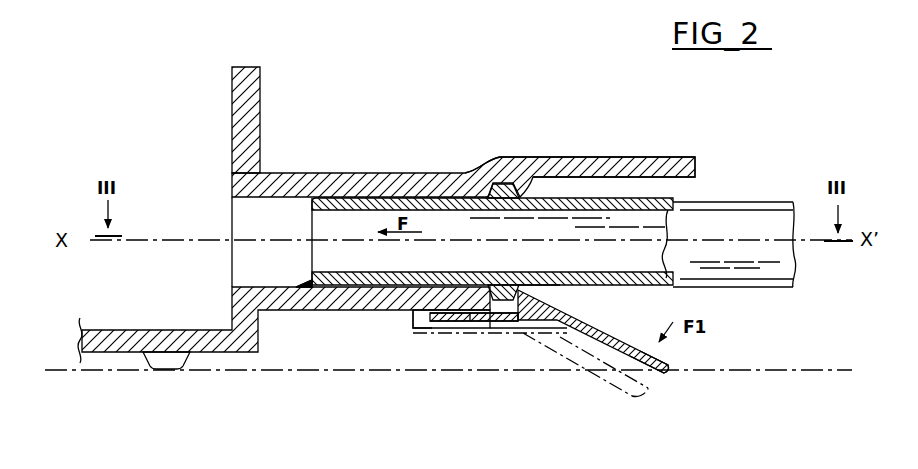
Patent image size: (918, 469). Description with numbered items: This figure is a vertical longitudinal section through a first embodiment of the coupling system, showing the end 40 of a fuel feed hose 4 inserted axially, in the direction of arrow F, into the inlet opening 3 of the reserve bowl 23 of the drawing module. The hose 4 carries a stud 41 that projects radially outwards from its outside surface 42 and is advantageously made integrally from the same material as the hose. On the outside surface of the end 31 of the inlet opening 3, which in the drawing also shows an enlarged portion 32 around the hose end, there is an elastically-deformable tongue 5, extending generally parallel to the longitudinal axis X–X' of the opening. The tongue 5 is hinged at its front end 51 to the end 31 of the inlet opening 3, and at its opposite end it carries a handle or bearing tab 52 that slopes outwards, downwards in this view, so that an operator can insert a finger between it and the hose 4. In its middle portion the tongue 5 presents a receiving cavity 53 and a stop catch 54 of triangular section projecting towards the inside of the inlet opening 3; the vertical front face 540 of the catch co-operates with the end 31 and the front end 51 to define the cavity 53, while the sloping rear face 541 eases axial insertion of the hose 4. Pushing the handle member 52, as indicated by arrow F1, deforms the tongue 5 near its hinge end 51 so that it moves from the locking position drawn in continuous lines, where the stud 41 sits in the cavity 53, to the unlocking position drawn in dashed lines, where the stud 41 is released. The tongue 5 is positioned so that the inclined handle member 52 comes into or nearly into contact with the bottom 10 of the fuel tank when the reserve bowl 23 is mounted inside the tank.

The inlet opening 3 is at (298, 172).
The fuel feed hose 4 is at (292, 292).
The elastically-deformable tongue 5 is at (437, 325).
The bottom of the fuel tank 10 is at (775, 370).
The reserve bowl 23 is at (195, 122).
The end of the inlet opening 31 is at (418, 330).
The collar 32 is at (500, 179).
The end of the fuel feed hose 40 is at (358, 205).
The stud 41 is at (518, 186).
The outside surface of the hose 42 is at (625, 194).
The hinge end of the tongue 51 is at (467, 320).
The handle member 52 is at (672, 372).
The receiving cavity 53 is at (492, 323).
The stop catch 54 is at (550, 325).
The vertical front face of the stop catch 540 is at (507, 333).
The sloping rear face of the stop catch 541 is at (515, 284).